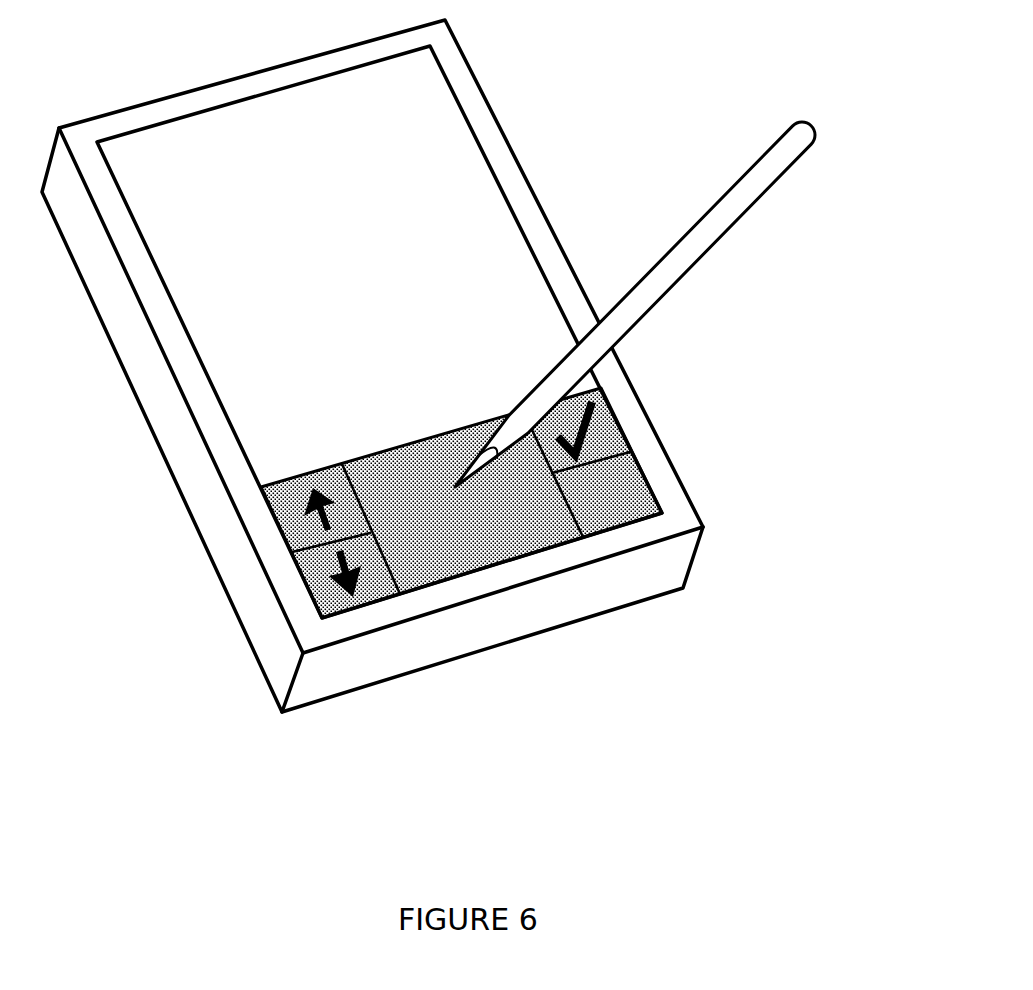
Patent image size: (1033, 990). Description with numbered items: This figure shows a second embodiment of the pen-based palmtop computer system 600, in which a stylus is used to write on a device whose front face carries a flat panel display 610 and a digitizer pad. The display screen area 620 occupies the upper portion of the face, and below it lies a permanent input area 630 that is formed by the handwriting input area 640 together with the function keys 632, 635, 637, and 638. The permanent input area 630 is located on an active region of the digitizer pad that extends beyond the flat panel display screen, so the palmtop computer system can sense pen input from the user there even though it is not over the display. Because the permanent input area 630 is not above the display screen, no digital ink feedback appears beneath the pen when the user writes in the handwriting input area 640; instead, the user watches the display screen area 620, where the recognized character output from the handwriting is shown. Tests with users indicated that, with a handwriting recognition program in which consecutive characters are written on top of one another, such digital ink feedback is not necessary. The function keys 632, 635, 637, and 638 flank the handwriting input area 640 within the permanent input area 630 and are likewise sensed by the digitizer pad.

The handheld computing device 600 is at (190, 743).
The display screen 610 is at (292, 197).
The display screen area 620 is at (472, 40).
The permanent input area 630 is at (653, 377).
The function key 632 is at (608, 435).
The function key 635 is at (300, 513).
The function key 637 is at (325, 592).
The function key 638 is at (608, 502).
The handwriting input area 640 is at (406, 602).